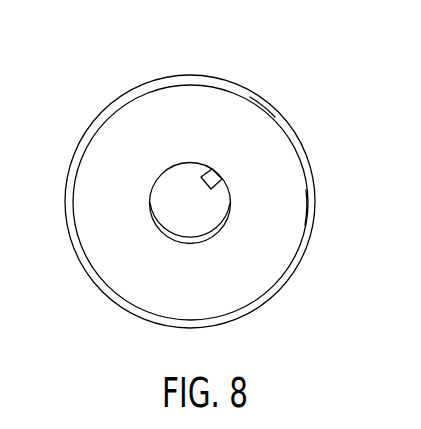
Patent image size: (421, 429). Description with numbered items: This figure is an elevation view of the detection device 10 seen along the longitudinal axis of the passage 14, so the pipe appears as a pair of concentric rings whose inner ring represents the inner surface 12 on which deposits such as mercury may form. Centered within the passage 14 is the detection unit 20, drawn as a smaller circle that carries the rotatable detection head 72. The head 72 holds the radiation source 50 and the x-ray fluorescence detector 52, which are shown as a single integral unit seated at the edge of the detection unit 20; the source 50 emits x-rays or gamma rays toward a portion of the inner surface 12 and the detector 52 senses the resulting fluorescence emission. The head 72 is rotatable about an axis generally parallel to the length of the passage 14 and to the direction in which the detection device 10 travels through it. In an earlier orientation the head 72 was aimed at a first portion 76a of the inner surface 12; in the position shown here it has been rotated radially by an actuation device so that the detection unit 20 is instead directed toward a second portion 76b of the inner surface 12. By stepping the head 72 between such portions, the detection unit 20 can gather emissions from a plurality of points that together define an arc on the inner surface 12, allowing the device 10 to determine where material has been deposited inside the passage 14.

The detection device 10 is at (166, 201).
The inner surface 12 is at (77, 235).
The passage 14 is at (64, 192).
The detection unit 20 is at (148, 176).
The radiation source 50 is at (231, 100).
The x-ray fluorescence detector 52 is at (212, 171).
The rotatable detection head 72 is at (179, 240).
The first portion of the inner surface 76a is at (297, 206).
The second portion of the inner surface 76b is at (259, 110).